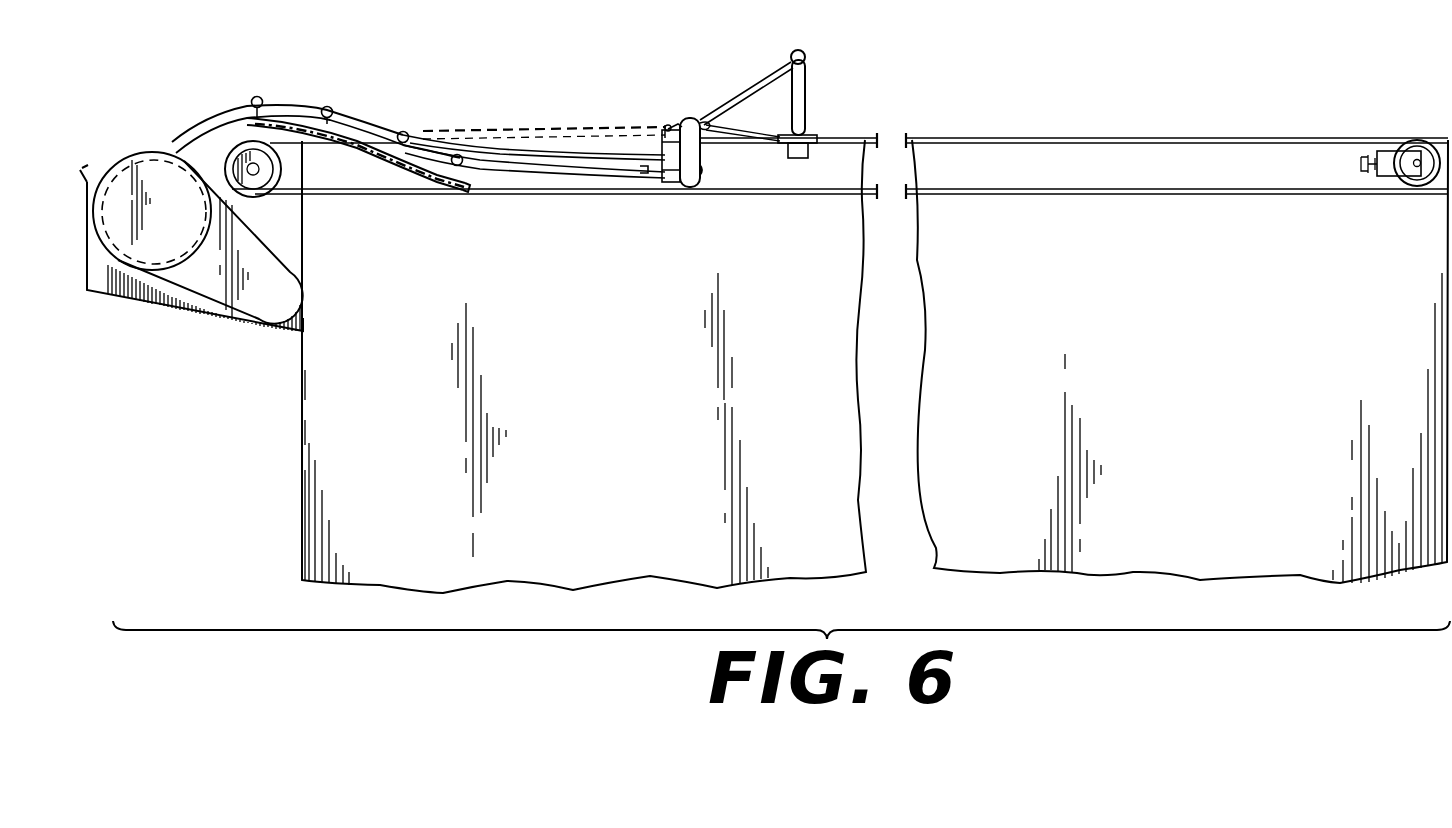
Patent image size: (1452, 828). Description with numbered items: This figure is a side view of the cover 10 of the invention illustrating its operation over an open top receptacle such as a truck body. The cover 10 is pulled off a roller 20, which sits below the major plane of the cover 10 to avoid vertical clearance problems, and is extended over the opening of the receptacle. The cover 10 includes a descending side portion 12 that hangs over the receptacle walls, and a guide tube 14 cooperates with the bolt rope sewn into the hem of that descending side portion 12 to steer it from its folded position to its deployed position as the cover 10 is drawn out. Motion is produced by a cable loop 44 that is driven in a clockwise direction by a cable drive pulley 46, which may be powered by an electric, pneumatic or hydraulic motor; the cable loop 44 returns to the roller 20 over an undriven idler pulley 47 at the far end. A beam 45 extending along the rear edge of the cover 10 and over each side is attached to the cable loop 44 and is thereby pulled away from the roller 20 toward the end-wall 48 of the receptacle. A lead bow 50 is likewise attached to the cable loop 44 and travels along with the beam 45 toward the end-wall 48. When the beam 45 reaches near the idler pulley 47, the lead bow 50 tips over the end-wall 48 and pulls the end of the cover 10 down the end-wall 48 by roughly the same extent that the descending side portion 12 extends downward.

The cover 10 is at (474, 130).
The descending side portion 12 is at (551, 178).
The guide tube 14 is at (378, 152).
The roller 20 is at (178, 261).
The cable loop 44 is at (366, 195).
The beam 45 is at (698, 155).
The cable drive pulley 46 is at (258, 185).
The idler pulley 47 is at (1420, 183).
The end-wall 48 is at (1445, 226).
The lead bow 50 is at (812, 100).